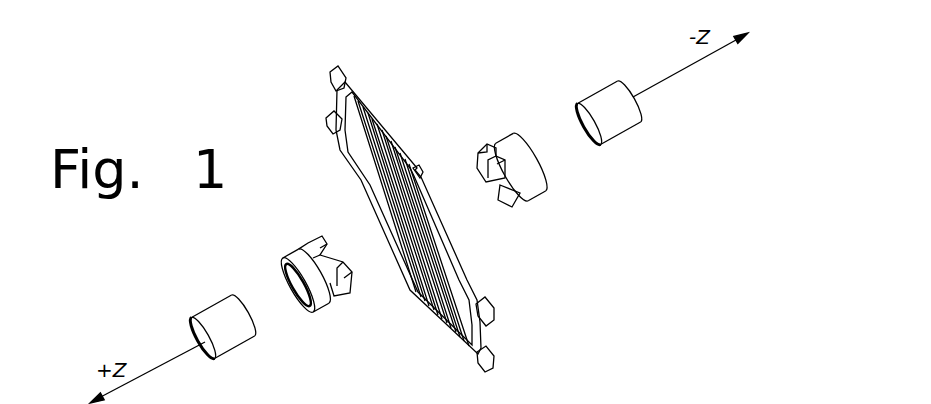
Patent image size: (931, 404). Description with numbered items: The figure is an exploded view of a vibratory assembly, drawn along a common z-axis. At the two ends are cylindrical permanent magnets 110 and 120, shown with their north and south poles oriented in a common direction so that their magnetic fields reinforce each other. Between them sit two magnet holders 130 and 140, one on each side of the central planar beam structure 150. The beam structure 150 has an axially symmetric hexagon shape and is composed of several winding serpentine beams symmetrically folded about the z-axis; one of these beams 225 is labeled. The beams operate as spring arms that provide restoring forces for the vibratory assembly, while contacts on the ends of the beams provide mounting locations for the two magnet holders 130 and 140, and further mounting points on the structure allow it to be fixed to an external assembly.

The cylindrical permanent magnet 110 is at (213, 310).
The cylindrical permanent magnet 120 is at (600, 91).
The magnet holder 130 is at (305, 255).
The magnet holder 140 is at (500, 136).
The planar beam structure 150 is at (489, 309).
The beam 225 is at (410, 249).